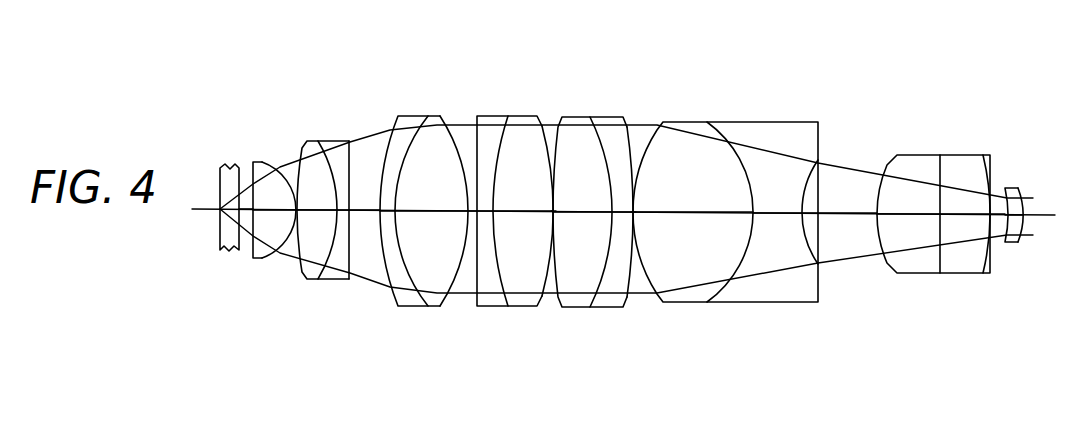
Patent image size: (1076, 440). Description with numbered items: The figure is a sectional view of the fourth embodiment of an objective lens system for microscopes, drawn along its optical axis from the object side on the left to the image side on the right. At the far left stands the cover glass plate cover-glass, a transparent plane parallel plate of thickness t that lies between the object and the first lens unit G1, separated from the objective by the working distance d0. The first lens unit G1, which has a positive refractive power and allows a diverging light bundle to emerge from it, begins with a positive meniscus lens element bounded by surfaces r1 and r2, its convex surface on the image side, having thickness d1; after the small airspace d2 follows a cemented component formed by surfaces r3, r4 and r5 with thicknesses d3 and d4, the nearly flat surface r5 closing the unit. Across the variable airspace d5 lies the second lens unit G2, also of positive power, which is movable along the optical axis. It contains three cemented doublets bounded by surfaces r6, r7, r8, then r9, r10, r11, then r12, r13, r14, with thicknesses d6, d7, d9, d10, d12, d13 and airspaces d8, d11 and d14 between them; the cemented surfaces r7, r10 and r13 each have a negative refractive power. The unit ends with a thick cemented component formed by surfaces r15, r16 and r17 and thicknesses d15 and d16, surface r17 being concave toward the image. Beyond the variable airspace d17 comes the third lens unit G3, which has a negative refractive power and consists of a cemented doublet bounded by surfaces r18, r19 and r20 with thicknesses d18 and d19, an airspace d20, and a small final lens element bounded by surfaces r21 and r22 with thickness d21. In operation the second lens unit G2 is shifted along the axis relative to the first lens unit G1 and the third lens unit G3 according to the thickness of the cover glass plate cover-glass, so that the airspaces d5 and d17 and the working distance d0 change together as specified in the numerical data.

The cover glass plate cover-glass is at (221, 235).
The first lens unit G1 is at (364, 32).
The second lens unit G2 is at (828, 35).
The third lens unit G3 is at (1042, 37).
The radius of curvature of first lens surface r1 is at (253, 195).
The radius of curvature of second lens surface r2 is at (264, 193).
The radius of curvature of third lens surface r3 is at (298, 150).
The radius of curvature of fourth lens surface r4 is at (330, 147).
The radius of curvature of fifth lens surface r5 is at (349, 141).
The radius of curvature of sixth lens surface r6 is at (387, 147).
The radius of curvature of seventh lens surface r7 is at (428, 118).
The radius of curvature of eighth lens surface r8 is at (448, 116).
The radius of curvature of ninth lens surface r9 is at (477, 120).
The radius of curvature of tenth lens surface r10 is at (507, 116).
The radius of curvature of eleventh lens surface r11 is at (553, 211).
The radius of curvature of twelfth lens surface r12 is at (559, 127).
The radius of curvature of thirteenth lens surface r13 is at (591, 117).
The radius of curvature of fourteenth lens surface r14 is at (633, 212).
The radius of curvature of fifteenth lens surface r15 is at (657, 125).
The radius of curvature of sixteenth lens surface r16 is at (735, 145).
The radius of curvature of seventeenth lens surface r17 is at (805, 163).
The radius of curvature of eighteenth lens surface r18 is at (878, 175).
The radius of curvature of nineteenth lens surface r19 is at (940, 168).
The radius of curvature of twentieth lens surface r20 is at (982, 158).
The radius of curvature of twenty-first lens surface r21 is at (1005, 188).
The radius of curvature of twenty-second lens surface r22 is at (1023, 215).
The working distance d0 is at (245, 210).
The thickness of first lens element d1 is at (270, 211).
The airspace between first and second lens elements d2 is at (297, 211).
The thickness of second lens element d3 is at (318, 211).
The thickness of third lens element d4 is at (344, 211).
The variable airspace between first and second lens units d5 is at (365, 211).
The thickness of fourth lens element d6 is at (390, 211).
The thickness of fifth lens element d7 is at (425, 211).
The airspace between fifth and sixth lens elements d8 is at (470, 211).
The thickness of sixth lens element d9 is at (484, 211).
The thickness of seventh lens element d10 is at (527, 211).
The airspace between seventh and eighth lens elements d11 is at (555, 211).
The thickness of eighth lens element d12 is at (583, 212).
The thickness of ninth lens element d13 is at (622, 212).
The airspace between ninth and tenth lens elements d14 is at (636, 212).
The thickness of tenth lens element d15 is at (673, 212).
The thickness of eleventh lens element d16 is at (770, 213).
The variable airspace between second and third lens units d17 is at (840, 213).
The thickness of twelfth lens element d18 is at (905, 214).
The thickness of thirteenth lens element d19 is at (958, 214).
The airspace between thirteenth and fourteenth lens elements d20 is at (998, 214).
The thickness of fourteenth lens element d21 is at (1013, 243).